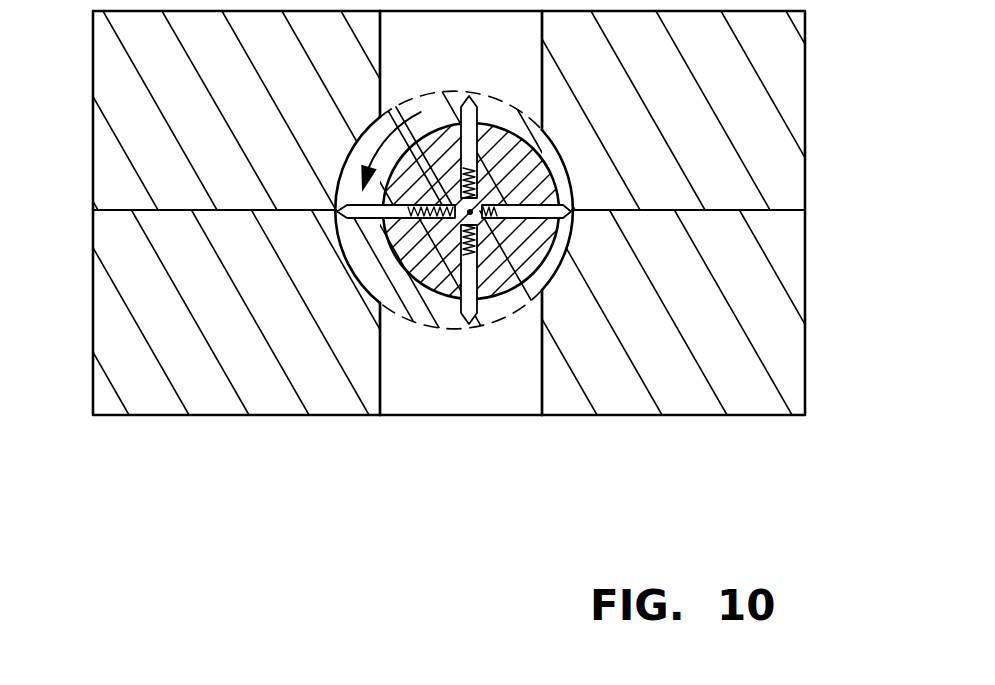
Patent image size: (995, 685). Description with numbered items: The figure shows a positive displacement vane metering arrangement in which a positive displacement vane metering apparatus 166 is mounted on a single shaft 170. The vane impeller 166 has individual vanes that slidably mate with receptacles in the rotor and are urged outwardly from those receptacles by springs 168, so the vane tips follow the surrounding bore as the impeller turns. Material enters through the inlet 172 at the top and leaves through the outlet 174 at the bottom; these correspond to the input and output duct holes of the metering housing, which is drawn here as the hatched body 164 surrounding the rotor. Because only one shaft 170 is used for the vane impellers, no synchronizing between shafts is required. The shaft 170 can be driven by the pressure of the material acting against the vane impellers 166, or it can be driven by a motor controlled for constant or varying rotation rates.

The housing 164 is at (267, 388).
The positive displacement vane metering apparatus 166 is at (530, 207).
The springs 168 is at (475, 242).
The shaft 170 is at (466, 213).
The inlet 172 is at (482, 57).
The outlet 174 is at (486, 390).